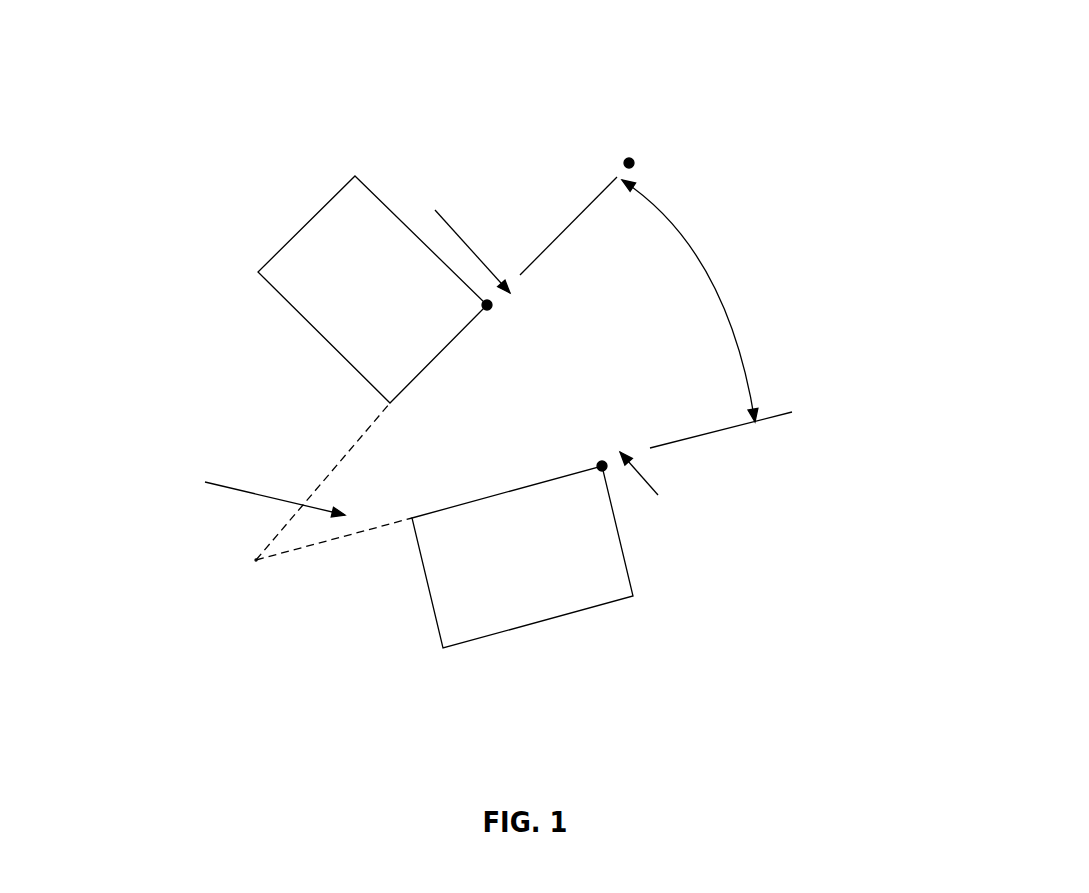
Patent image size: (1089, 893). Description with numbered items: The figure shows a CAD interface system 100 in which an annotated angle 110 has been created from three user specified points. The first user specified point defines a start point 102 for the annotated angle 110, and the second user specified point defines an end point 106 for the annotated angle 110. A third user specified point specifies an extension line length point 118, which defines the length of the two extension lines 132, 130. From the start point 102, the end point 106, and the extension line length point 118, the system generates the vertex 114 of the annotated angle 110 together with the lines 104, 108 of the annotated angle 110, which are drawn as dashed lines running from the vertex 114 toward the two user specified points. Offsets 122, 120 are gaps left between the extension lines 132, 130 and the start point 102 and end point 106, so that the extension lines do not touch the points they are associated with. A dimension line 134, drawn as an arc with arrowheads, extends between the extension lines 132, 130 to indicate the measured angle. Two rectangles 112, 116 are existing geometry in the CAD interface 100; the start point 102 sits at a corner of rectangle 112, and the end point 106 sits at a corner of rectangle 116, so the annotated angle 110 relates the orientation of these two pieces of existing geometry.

The CAD interface system 100 is at (1037, 70).
The start point 102 is at (602, 463).
The line 104 is at (320, 545).
The end point 106 is at (487, 310).
The line 108 is at (342, 465).
The annotated angle 110 is at (259, 490).
The rectangle 112 is at (507, 632).
The vertex 114 is at (253, 560).
The rectangle 116 is at (302, 225).
The extension line length point 118 is at (633, 168).
The offset 120 is at (654, 483).
The offset 122 is at (456, 243).
The extension line 130 is at (703, 437).
The extension line 132 is at (580, 212).
The dimension line 134 is at (730, 332).